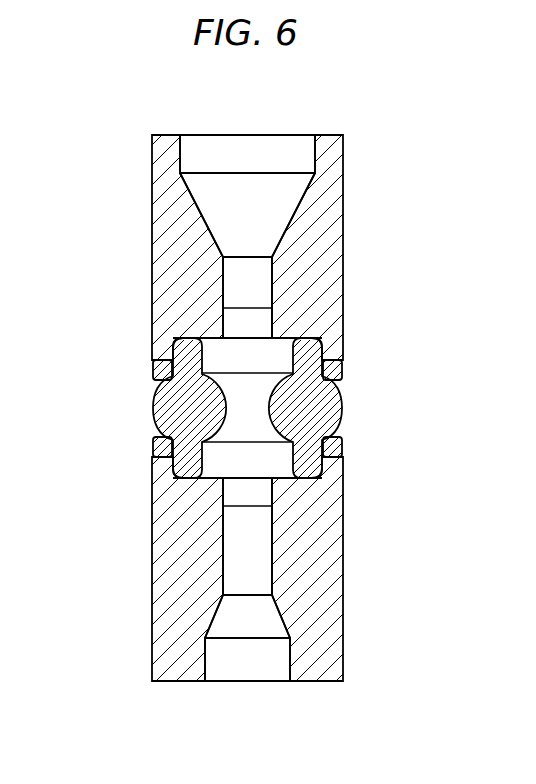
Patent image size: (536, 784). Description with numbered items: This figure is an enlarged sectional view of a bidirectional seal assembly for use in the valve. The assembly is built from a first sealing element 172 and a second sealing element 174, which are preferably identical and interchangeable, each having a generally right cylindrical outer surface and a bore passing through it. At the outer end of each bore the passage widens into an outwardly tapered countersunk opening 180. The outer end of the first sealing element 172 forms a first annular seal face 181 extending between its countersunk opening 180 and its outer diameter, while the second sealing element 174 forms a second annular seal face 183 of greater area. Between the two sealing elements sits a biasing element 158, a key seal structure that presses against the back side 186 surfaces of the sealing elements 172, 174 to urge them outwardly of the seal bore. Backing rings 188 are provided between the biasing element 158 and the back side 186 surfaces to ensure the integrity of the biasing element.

The biasing element 158 is at (155, 412).
The first sealing element 172 is at (152, 237).
The second sealing element 174 is at (152, 547).
The countersunk opening 180 is at (282, 133).
The first annular seal face 181 is at (163, 133).
The second annular seal face 183 is at (180, 682).
The back side surface 186 is at (153, 366).
The backing ring 188 is at (343, 372).